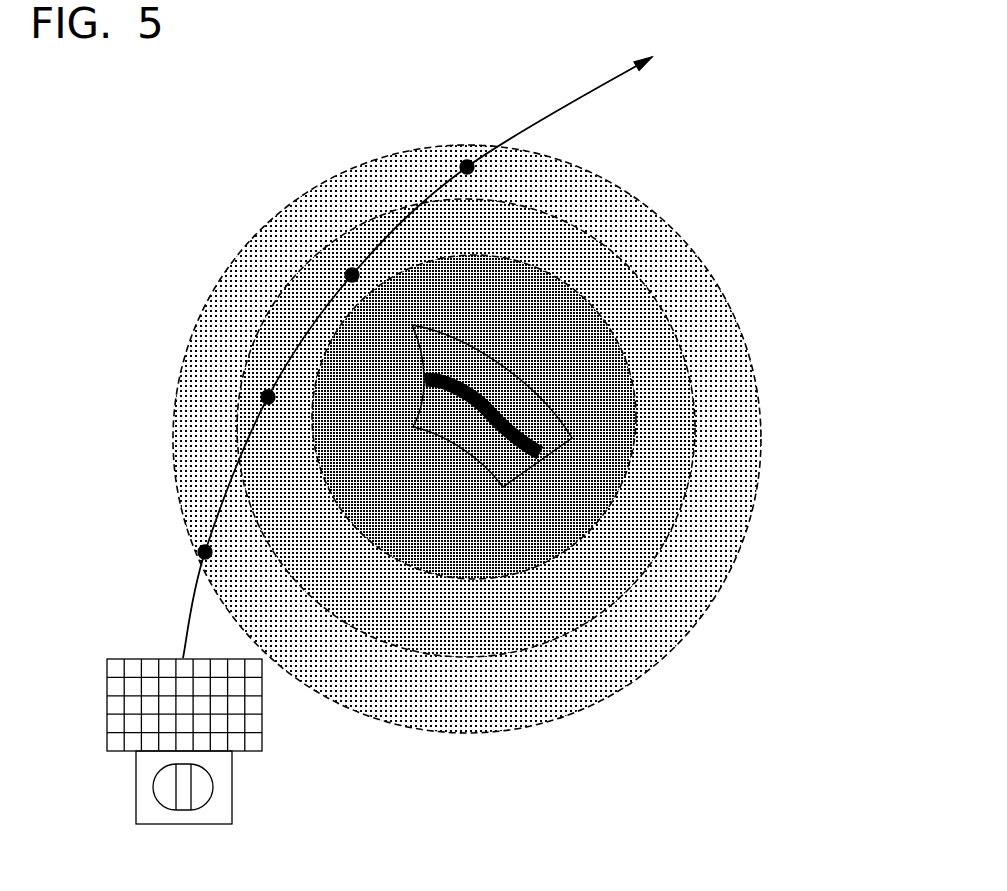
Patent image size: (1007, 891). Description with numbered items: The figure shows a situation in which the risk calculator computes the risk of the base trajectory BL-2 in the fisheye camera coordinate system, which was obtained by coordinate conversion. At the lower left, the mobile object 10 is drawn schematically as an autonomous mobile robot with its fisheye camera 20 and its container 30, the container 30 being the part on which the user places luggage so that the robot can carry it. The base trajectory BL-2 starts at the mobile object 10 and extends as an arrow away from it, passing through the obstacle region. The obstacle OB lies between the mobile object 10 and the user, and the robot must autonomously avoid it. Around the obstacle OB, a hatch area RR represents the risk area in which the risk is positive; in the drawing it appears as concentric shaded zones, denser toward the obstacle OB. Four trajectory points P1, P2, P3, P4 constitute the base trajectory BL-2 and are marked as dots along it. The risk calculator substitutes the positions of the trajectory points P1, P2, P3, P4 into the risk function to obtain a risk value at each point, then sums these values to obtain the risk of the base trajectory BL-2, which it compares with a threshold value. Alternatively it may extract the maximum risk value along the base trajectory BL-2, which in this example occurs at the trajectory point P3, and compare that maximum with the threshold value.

The hatch area RR is at (710, 617).
The obstacle OB is at (550, 410).
The base trajectory BL-2 is at (567, 100).
The trajectory point P1 is at (198, 550).
The trajectory point P2 is at (265, 393).
The trajectory point P3 is at (348, 270).
The trajectory point P4 is at (463, 160).
The container 30 is at (107, 685).
The mobile object 10 is at (136, 785).
The fisheye camera 20 is at (213, 787).